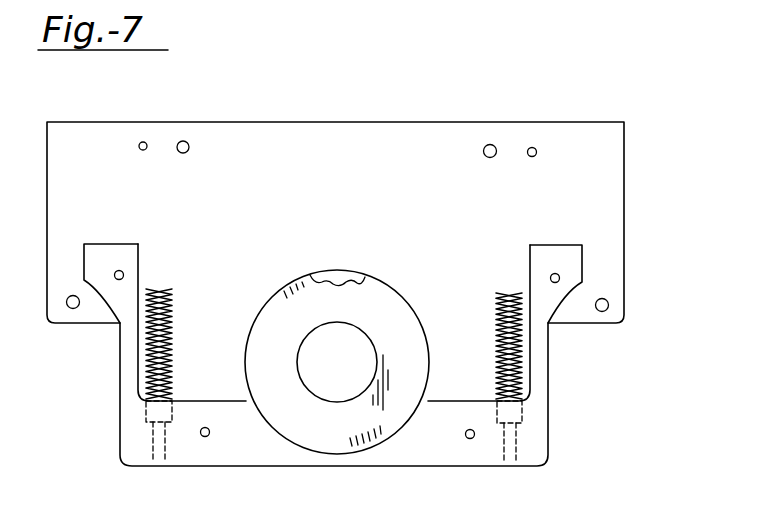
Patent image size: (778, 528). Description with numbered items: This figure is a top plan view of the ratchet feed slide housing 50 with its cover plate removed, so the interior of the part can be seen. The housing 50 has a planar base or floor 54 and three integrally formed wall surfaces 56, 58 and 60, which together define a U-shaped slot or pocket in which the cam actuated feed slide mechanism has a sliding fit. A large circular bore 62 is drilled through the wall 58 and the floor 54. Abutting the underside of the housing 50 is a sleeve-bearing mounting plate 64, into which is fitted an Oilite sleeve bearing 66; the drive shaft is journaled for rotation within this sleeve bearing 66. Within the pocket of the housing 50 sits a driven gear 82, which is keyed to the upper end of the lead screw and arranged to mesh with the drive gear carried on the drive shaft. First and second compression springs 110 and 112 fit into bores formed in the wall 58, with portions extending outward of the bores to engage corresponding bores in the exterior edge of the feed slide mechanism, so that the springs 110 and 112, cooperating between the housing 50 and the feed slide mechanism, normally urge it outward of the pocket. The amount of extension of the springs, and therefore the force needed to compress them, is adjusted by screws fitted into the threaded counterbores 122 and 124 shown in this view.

The housing 50 is at (385, 295).
The planar base or floor 54 is at (307, 148).
The wall surface 56 is at (138, 262).
The wall surface 60 is at (531, 262).
The wall surface 58 is at (433, 401).
The large circular bore 62 is at (336, 324).
The sleeve-bearing mounting plate 64 is at (403, 305).
The Oilite sleeve bearing 66 is at (258, 337).
The driven gear 82 is at (380, 283).
The first compression spring 110 is at (158, 288).
The second compression spring 112 is at (503, 292).
The threaded counterbore 122 is at (155, 437).
The threaded counterbore 124 is at (502, 466).